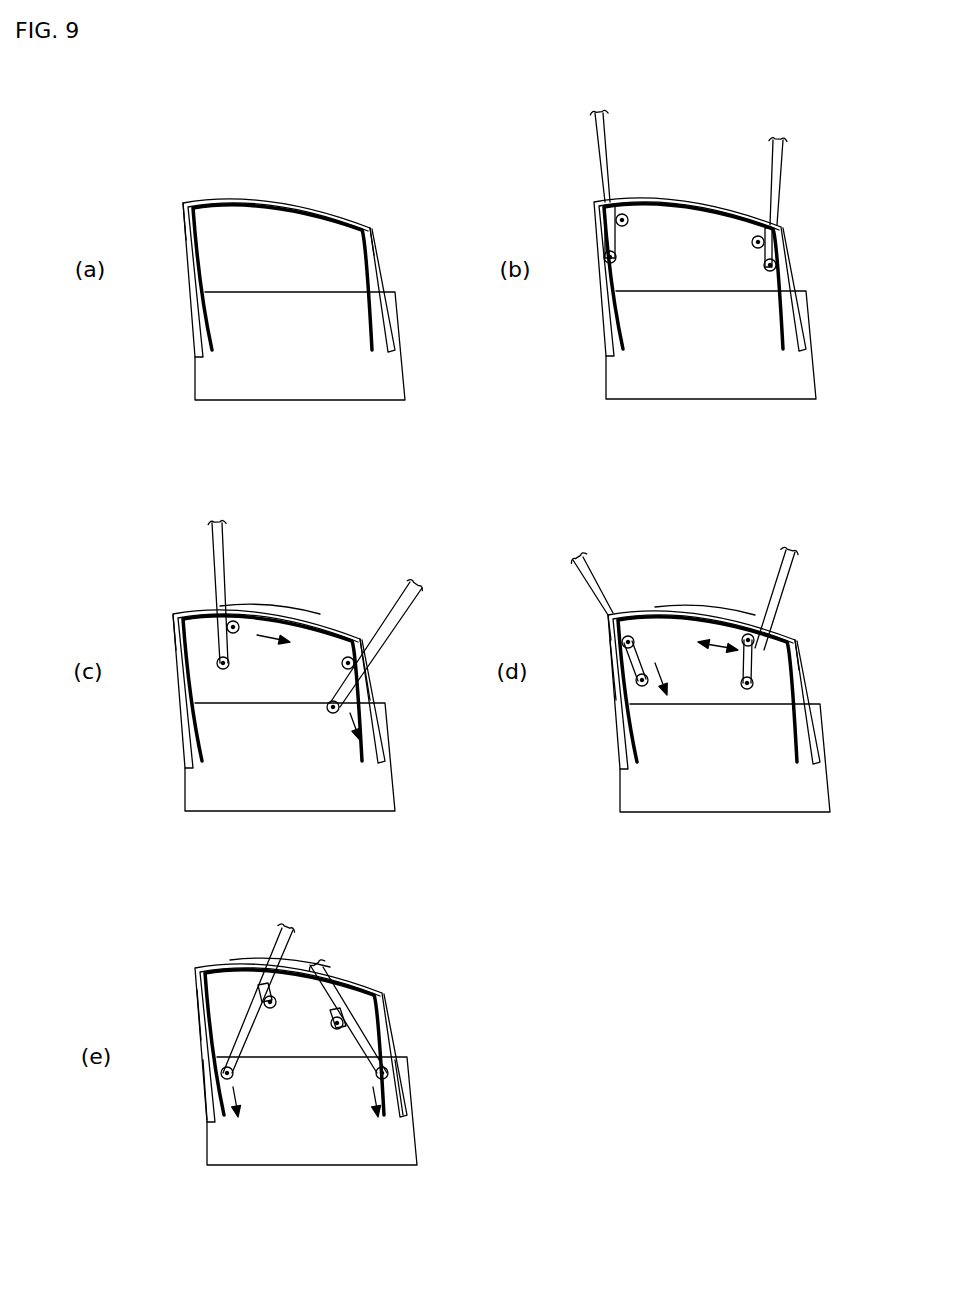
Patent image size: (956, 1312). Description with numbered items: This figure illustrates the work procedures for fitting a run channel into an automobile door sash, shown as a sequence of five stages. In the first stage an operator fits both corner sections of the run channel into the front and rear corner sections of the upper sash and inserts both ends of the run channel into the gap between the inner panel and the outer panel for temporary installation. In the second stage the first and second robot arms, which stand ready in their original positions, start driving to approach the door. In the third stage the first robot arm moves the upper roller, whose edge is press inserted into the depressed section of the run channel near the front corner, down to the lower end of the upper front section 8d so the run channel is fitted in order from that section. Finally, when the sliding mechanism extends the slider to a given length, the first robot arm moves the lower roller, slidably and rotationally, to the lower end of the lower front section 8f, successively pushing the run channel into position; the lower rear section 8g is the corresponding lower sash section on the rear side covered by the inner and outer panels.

The upper front section 8d is at (368, 673).
The lower front section 8f is at (397, 1093).
The lower rear section 8g is at (212, 1100).